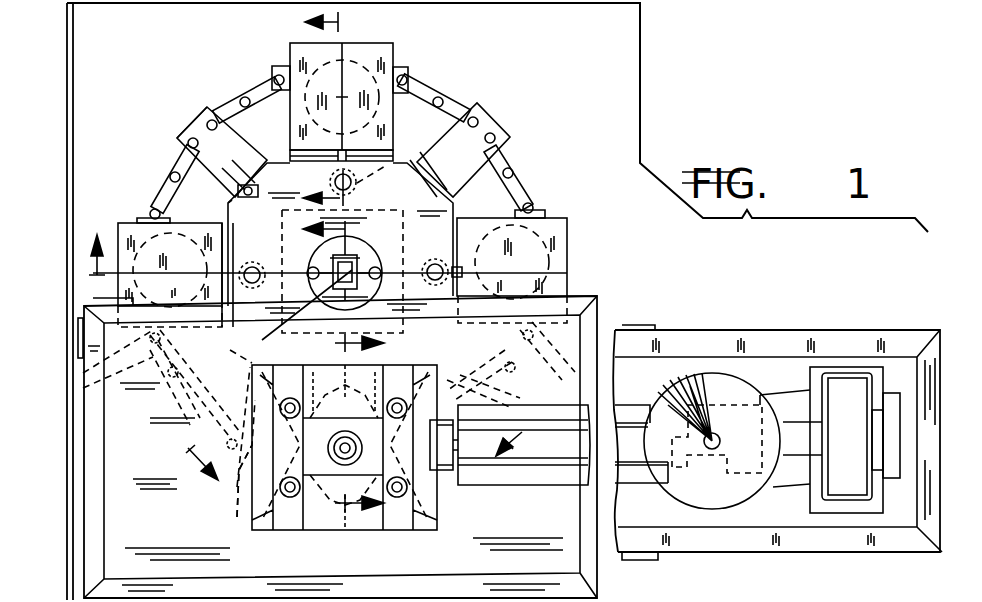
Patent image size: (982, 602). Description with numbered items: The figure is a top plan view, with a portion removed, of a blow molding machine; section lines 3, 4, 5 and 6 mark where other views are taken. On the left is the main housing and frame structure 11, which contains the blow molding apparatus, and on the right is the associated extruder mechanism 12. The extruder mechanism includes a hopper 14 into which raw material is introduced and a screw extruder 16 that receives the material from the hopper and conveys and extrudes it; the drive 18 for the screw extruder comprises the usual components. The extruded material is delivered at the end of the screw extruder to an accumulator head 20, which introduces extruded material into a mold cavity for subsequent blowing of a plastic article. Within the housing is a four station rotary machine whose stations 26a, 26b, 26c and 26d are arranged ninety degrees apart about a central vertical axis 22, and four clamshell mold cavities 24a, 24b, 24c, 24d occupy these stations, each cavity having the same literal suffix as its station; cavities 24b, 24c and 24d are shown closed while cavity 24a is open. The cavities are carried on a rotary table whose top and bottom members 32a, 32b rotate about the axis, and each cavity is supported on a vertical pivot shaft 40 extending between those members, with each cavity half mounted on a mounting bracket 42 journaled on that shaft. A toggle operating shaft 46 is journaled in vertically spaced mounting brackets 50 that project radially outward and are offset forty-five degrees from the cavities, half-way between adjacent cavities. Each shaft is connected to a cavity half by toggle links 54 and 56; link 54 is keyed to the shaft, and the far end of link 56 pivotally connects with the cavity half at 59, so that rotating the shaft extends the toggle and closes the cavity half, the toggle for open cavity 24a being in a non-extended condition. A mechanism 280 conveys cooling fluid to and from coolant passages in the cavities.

The main housing and frame structure 11 is at (600, 293).
The extruder mechanism 12 is at (782, 330).
The hopper 14 is at (713, 373).
The screw extruder 16 is at (635, 403).
The drive 18 is at (884, 405).
The accumulator head 20 is at (428, 470).
The central vertical axis 22 is at (347, 262).
The mold cavity 24a is at (237, 518).
The mold cavity 24b is at (140, 216).
The mold cavity 24c is at (392, 43).
The mold cavity 24d is at (553, 218).
The station 26a is at (305, 530).
The station 26b is at (103, 290).
The station 26c is at (303, 33).
The station 26d is at (580, 247).
The mechanism for conveying fluid 280 is at (320, 265).
The top member 32a is at (447, 103).
The bottom member 32b is at (413, 75).
The vertical pivot shaft 40 is at (333, 175).
The mounting bracket 42 is at (226, 194).
The toggle operating shaft 46 is at (193, 143).
The mounting bracket 50 is at (240, 168).
The toggle link 54 is at (258, 80).
The toggle link 56 is at (228, 100).
The pivotal connection 59 is at (280, 70).
The section line 3- 3 is at (155, 353).
The section line 4- 4 is at (425, 340).
The section line 5- 5 is at (342, 111).
The section line 6- 6 is at (344, 425).